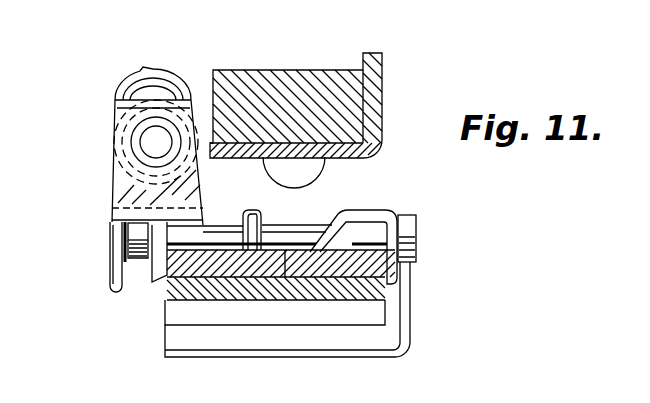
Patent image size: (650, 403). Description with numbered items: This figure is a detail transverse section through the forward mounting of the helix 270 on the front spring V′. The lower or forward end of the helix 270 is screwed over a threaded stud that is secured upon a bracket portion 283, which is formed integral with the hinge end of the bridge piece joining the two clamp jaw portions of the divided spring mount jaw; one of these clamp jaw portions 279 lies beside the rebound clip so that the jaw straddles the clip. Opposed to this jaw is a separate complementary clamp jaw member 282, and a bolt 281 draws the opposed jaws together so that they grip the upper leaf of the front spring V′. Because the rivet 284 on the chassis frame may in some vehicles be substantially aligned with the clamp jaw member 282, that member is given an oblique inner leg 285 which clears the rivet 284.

The helix 270 is at (166, 83).
The bracket portion 283 is at (132, 178).
The clamp jaw portion 279 is at (158, 257).
The bolt 281 is at (290, 245).
The complementary clamp jaw member 282 is at (390, 212).
The rivet 284 is at (306, 181).
The oblique inner leg 285 is at (338, 223).
The front spring V′ is at (370, 312).